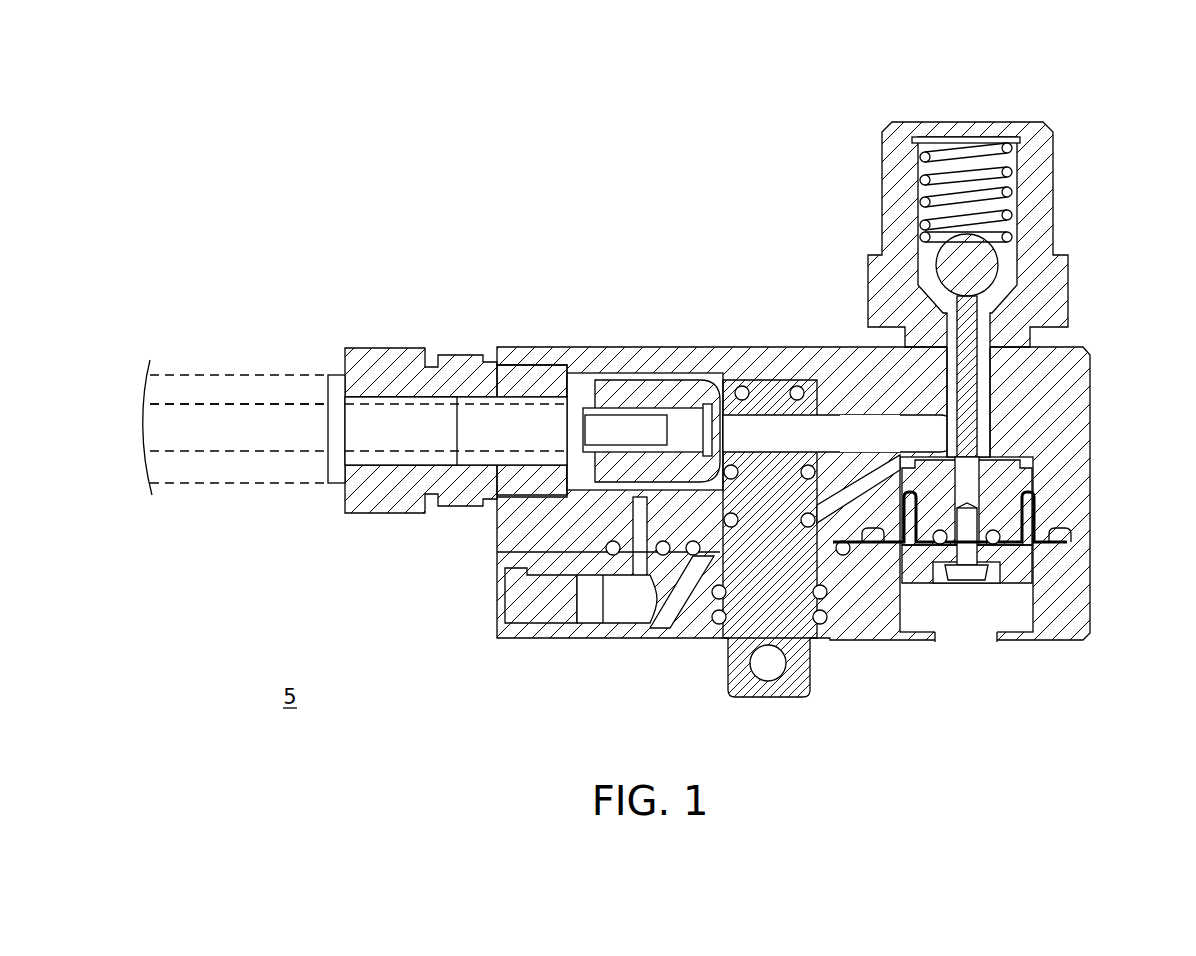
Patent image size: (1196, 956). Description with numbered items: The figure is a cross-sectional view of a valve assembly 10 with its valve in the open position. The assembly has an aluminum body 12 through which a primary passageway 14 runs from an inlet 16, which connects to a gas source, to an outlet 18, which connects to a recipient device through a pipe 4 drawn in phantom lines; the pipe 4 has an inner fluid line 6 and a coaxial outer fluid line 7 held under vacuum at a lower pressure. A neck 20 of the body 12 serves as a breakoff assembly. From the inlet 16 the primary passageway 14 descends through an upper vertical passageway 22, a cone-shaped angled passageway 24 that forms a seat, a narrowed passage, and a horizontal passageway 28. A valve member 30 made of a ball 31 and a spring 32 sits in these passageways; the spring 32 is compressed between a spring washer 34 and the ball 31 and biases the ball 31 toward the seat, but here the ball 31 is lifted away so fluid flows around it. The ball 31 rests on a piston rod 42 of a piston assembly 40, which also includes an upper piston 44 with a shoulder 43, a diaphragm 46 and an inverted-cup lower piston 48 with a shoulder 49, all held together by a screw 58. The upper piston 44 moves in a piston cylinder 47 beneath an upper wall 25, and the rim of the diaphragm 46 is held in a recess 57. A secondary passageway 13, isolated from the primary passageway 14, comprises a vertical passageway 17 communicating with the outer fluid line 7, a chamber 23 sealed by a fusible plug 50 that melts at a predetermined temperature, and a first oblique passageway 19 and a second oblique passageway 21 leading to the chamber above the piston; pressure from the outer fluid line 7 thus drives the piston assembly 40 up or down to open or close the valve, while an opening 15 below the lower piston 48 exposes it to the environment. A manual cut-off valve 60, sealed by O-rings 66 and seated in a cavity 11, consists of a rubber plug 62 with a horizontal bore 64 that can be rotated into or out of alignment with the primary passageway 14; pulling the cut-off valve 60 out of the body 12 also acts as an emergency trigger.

The pipe 4 is at (215, 353).
The inner fluid line 6 is at (246, 444).
The outer fluid line 7 is at (276, 386).
The valve assembly 10 is at (1167, 100).
The cavity 11 is at (686, 440).
The body 12 is at (713, 361).
The secondary passageway 13 is at (690, 614).
The primary passageway 14 is at (847, 435).
The opening 15 is at (974, 638).
The inlet 16 is at (972, 136).
The vertical passageway 17 is at (625, 520).
The outlet 18 is at (333, 462).
The first oblique passageway 19 is at (681, 600).
The neck 20 is at (1040, 341).
The second oblique passageway 21 is at (858, 532).
The upper vertical passageway 22 is at (1010, 229).
The chamber 23 is at (624, 604).
The angled passageway 24 is at (992, 301).
The upper wall 25 is at (1022, 466).
The horizontal passageway 28 is at (883, 430).
The valve member 30 is at (1105, 207).
The ball 31 is at (986, 266).
The spring 32 is at (1010, 191).
The spring washer 34 is at (1015, 141).
The piston assembly 40 is at (1056, 428).
The piston rod 42 is at (971, 381).
The shoulder 43 is at (1040, 456).
The upper piston 44 is at (1035, 471).
The diaphragm 46 is at (1036, 526).
The piston cylinder 47 is at (1035, 501).
The lower piston 48 is at (1025, 566).
The shoulder 49 is at (1013, 582).
The fusible plug 50 is at (513, 606).
The recess 57 is at (1071, 543).
The screw 58 is at (965, 547).
The manual cut-off valve 60 is at (746, 684).
The rubber plug 62 is at (772, 668).
The horizontal bore 64 is at (764, 425).
The O-rings 66 is at (838, 536).